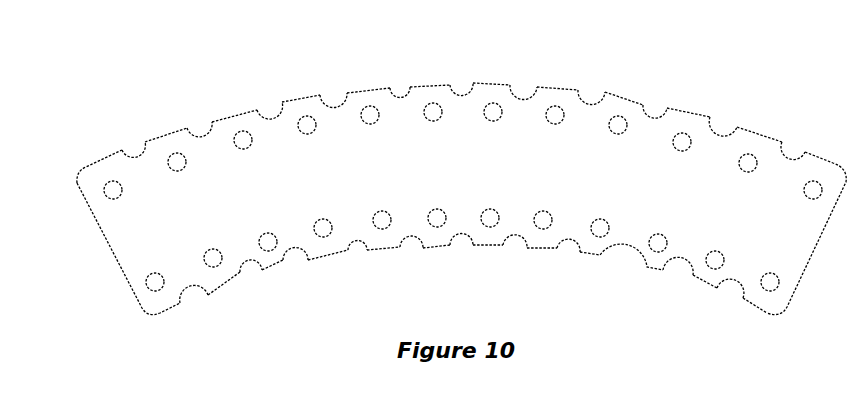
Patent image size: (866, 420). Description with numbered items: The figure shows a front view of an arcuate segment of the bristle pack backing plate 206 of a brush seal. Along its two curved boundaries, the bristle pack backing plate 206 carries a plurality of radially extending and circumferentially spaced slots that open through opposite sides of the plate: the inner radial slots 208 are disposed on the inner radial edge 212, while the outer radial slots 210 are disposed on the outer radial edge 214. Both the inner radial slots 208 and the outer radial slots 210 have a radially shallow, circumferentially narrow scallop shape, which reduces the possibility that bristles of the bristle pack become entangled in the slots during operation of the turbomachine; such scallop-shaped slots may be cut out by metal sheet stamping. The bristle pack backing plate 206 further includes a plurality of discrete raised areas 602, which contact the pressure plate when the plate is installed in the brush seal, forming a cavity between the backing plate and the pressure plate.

The bristle pack backing plate 206 is at (461, 212).
The inner radial slots 208 is at (193, 297).
The outer radial slots 210 is at (273, 110).
The inner radial edge 212 is at (600, 255).
The outer radial edge 214 is at (557, 87).
The raised areas 602 is at (660, 240).